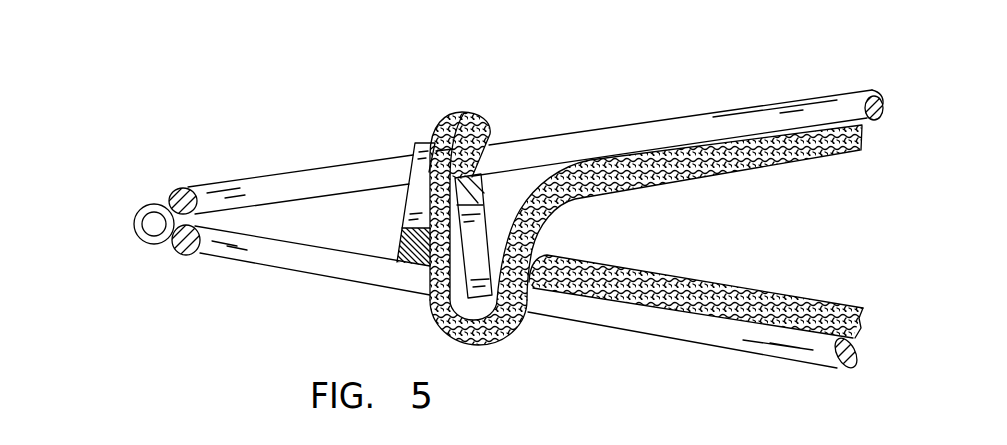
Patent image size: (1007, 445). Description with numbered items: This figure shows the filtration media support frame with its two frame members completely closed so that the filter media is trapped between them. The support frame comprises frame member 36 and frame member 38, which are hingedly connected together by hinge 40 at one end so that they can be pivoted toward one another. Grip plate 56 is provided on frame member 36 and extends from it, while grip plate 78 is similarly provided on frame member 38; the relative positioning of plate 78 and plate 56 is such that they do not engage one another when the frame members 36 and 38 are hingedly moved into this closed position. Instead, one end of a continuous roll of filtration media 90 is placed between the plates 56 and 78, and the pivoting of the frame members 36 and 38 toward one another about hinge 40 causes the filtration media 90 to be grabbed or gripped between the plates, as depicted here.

The frame member 36 is at (702, 106).
The frame member 38 is at (305, 289).
The hinge 40 is at (148, 223).
The grip plate 56 is at (486, 231).
The grip plate 78 is at (398, 191).
The filtration media 90 is at (760, 163).